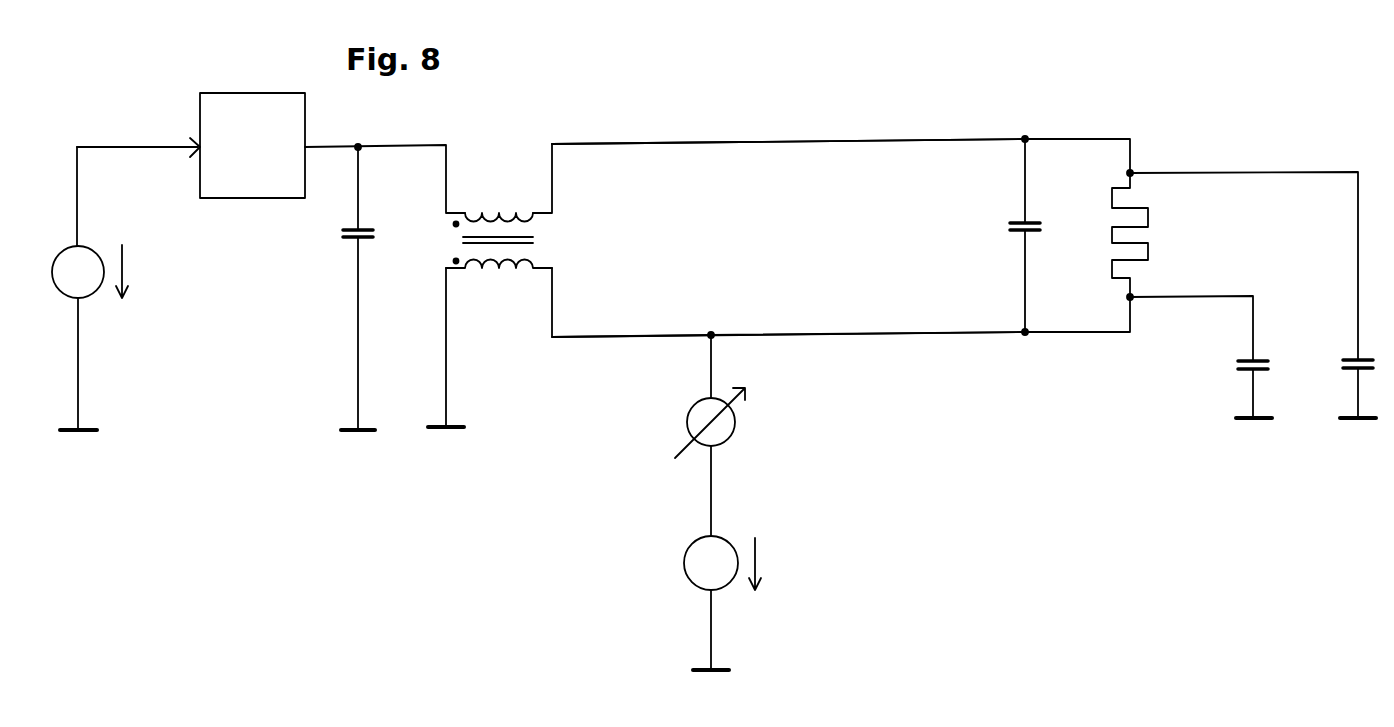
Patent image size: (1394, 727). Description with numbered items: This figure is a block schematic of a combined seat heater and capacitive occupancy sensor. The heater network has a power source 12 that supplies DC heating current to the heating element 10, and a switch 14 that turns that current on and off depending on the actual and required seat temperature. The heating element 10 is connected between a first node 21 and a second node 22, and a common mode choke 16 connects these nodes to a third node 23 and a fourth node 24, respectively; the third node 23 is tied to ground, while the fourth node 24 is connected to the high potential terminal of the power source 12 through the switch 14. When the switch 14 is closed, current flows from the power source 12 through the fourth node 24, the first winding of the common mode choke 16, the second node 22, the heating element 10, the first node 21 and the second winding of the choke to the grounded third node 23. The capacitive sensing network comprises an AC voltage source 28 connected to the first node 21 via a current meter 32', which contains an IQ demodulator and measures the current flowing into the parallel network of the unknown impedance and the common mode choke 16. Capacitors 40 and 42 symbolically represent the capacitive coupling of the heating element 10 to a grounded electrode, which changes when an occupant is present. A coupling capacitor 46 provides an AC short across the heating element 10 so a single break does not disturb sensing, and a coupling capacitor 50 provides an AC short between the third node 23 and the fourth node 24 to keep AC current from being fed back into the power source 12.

The power source 12 is at (90, 290).
The switch 14 is at (258, 198).
The coupling capacitor 50 is at (362, 240).
The fourth node 24 is at (446, 158).
The common mode choke 16 is at (492, 270).
The third node 23 is at (446, 410).
The second node 22 is at (905, 140).
The first node 21 is at (928, 331).
The coupling capacitor 46 is at (1030, 222).
The heating element 10 is at (1150, 216).
The capacitor 40 is at (1256, 360).
The capacitor 42 is at (1346, 368).
The current meter 32' is at (747, 396).
The AC voltage source 28 is at (685, 565).